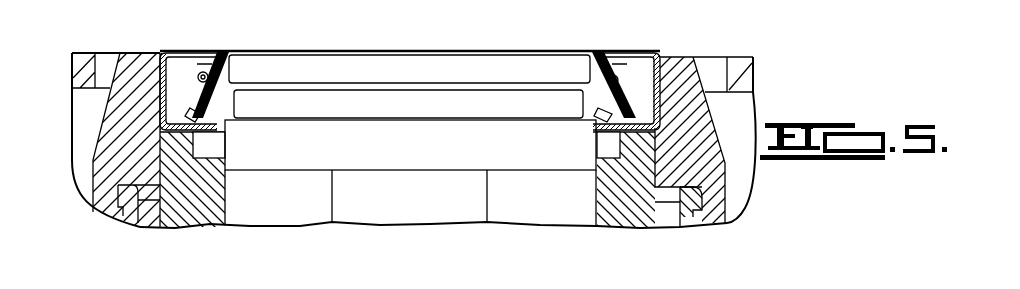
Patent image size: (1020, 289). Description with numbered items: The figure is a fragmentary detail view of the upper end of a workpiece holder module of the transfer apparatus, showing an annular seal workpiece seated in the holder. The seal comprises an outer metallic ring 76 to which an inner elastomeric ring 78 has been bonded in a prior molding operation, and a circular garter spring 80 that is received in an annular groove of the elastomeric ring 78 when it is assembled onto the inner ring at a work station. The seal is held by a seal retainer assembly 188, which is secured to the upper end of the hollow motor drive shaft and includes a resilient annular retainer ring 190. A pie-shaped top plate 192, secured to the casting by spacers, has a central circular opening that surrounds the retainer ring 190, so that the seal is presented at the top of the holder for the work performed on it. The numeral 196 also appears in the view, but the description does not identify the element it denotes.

The seal case 76 is at (655, 54).
The seal lip 78 is at (584, 51).
The seal inner ring 80 is at (595, 122).
The pin 188 is at (695, 223).
The bearing retainer 190 is at (672, 56).
The housing 192 is at (736, 56).
The housing bore 196 is at (918, 6).